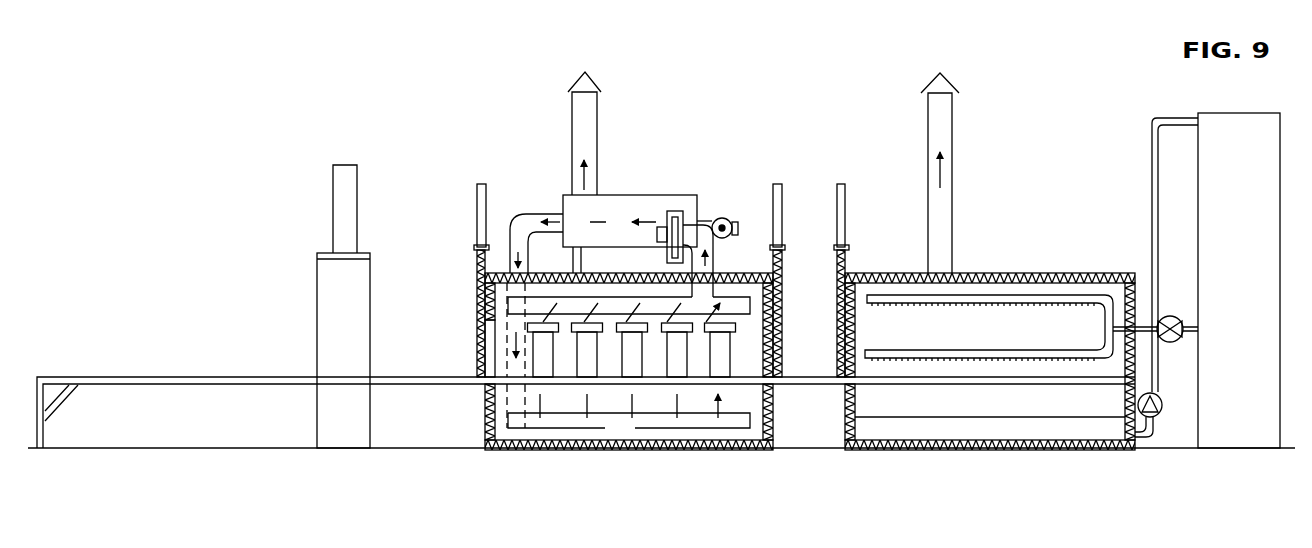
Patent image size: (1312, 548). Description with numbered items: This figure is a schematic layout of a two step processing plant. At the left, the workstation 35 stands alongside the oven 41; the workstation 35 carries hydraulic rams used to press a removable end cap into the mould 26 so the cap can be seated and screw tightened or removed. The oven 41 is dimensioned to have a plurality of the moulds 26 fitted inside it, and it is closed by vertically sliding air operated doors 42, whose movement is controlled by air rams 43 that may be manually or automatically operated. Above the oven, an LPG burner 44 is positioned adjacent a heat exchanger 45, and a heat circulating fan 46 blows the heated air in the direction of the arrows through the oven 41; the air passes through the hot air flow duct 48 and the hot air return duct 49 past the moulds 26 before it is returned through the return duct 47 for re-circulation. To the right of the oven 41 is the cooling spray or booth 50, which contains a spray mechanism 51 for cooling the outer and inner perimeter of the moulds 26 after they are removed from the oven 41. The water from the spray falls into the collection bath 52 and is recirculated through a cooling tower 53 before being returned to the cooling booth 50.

The mould 26 is at (547, 373).
The workstation 35 is at (322, 300).
The oven 41 is at (627, 388).
The vertically sliding air operated doors 42 is at (479, 353).
The air rams 43 is at (477, 218).
The LPG burner 44 is at (723, 239).
The heat exchanger 45 is at (621, 195).
The heat circulating fan 46 is at (667, 228).
The return duct 47 is at (508, 243).
The hot air flow duct 48 is at (589, 429).
The hot air return duct 49 is at (775, 300).
The cooling booth 50 is at (990, 360).
The spray mechanism 51 is at (1063, 304).
The collection bath 52 is at (1032, 436).
The cooling tower 53 is at (1239, 280).